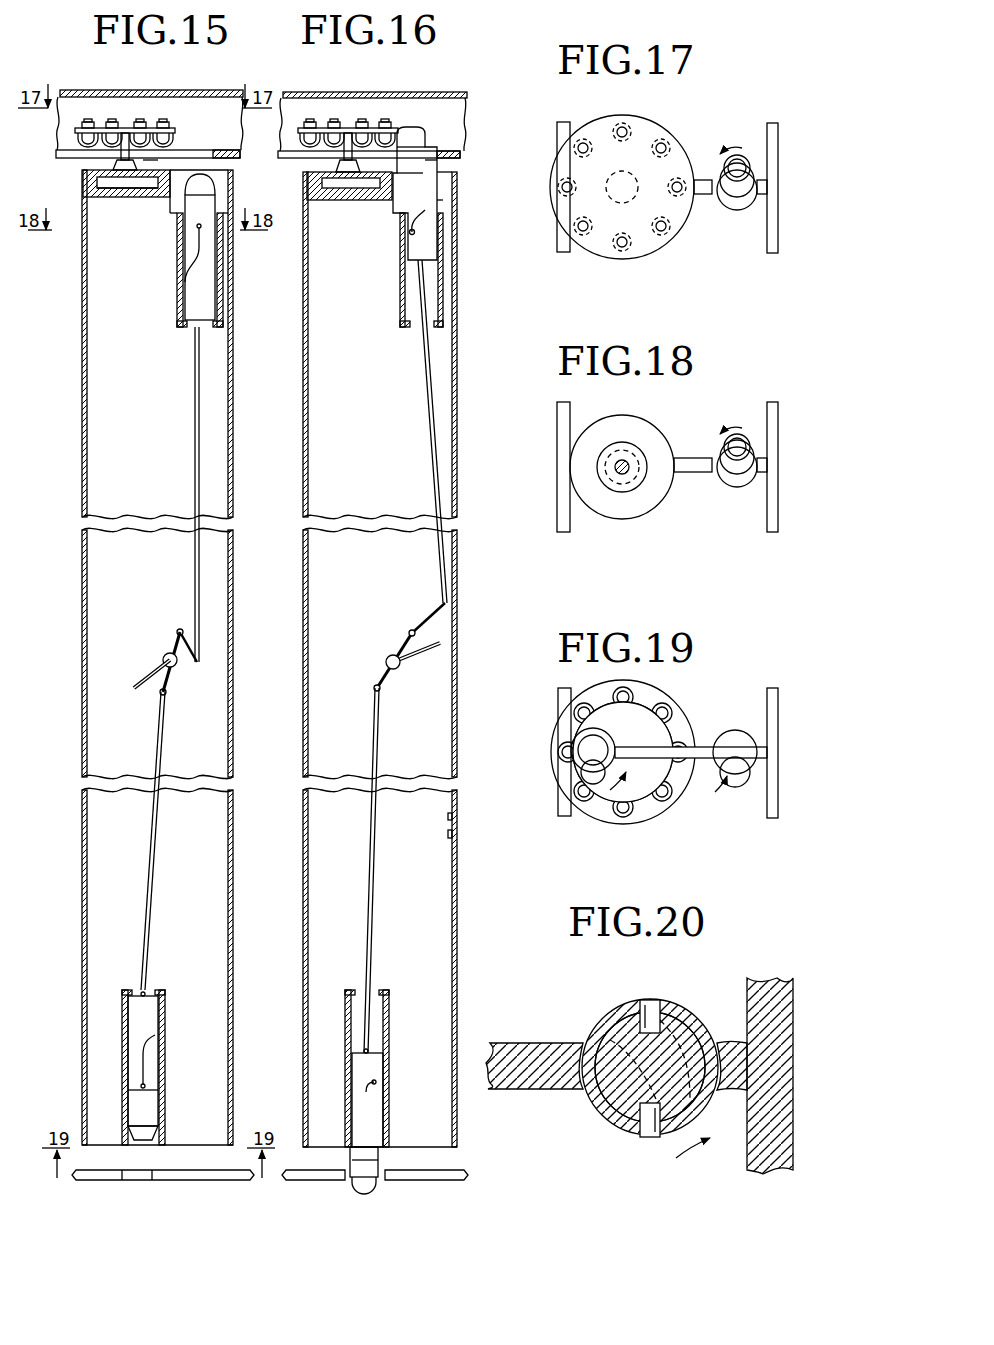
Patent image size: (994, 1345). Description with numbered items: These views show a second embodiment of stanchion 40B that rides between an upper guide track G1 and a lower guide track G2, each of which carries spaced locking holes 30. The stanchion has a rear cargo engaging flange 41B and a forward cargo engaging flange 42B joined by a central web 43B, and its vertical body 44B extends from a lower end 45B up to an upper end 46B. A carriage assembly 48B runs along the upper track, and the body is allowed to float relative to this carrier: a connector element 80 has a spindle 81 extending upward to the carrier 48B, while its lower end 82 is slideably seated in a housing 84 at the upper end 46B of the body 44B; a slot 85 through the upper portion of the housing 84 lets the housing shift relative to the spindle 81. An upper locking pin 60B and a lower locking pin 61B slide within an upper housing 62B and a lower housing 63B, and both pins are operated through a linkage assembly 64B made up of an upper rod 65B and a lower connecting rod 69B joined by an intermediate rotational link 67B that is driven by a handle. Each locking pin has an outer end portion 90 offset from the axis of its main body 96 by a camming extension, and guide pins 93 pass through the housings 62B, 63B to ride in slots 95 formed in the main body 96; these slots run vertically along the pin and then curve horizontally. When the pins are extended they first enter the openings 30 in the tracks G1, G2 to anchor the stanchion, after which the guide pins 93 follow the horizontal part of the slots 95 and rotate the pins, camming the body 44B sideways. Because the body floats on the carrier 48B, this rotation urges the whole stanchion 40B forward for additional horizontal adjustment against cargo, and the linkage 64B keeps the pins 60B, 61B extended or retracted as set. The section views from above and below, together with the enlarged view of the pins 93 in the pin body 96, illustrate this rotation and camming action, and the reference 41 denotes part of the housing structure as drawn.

In FIG. 15, the locking holes 30 is at (140, 1180).
In FIG. 15, the stanchion 40B is at (56, 740).
In FIG. 16, the stanchion 40B is at (471, 920).
In FIG. 16, the housing 41 is at (304, 905).
In FIG. 15, the rear cargo engaging flange 41B is at (86, 616).
In FIG. 16, the rear cargo engaging flange 41B is at (458, 807).
In FIG. 17, the rear cargo engaging flange 41B is at (566, 126).
In FIG. 18, the rear cargo engaging flange 41B is at (558, 512).
In FIG. 19, the rear cargo engaging flange 41B is at (558, 798).
In FIG. 15, the forward cargo engaging flange 42B is at (234, 402).
In FIG. 17, the forward cargo engaging flange 42B is at (770, 136).
In FIG. 18, the forward cargo engaging flange 42B is at (772, 528).
In FIG. 20, the forward cargo engaging flange 42B is at (794, 1008).
In FIG. 15, the central web 43B is at (114, 365).
In FIG. 15, the vertical body 44B is at (106, 858).
In FIG. 15, the lower end 45B is at (82, 1138).
In FIG. 15, the upper end 46B is at (100, 180).
In FIG. 15, the carriage assembly 48B is at (118, 128).
In FIG. 17, the carriage assembly 48B is at (626, 258).
In FIG. 18, the carriage assembly 48B is at (638, 520).
In FIG. 19, the carriage assembly 48B is at (678, 702).
In FIG. 15, the upper locking pin 60B is at (200, 312).
In FIG. 17, the upper locking pin 60B is at (738, 202).
In FIG. 18, the upper locking pin 60B is at (737, 478).
In FIG. 15, the lower locking pin 61B is at (150, 1105).
In FIG. 15, the upper housing 62B is at (222, 316).
In FIG. 16, the upper housing 62B is at (421, 270).
In FIG. 18, the upper housing 62B is at (750, 480).
In FIG. 19, the upper housing 62B is at (773, 802).
In FIG. 20, the upper housing 62B is at (588, 1030).
In FIG. 15, the lower housing 63B is at (122, 1012).
In FIG. 15, the linkage assembly 64B is at (150, 716).
In FIG. 15, the upper rod 65B is at (194, 492).
In FIG. 15, the intermediate rotational link 67B is at (176, 640).
In FIG. 15, the lower connecting rod 69B is at (152, 867).
In FIG. 15, the connector element 80 is at (156, 158).
In FIG. 15, the spindle 81 is at (120, 156).
In FIG. 15, the lower end of connector element 82 is at (124, 188).
In FIG. 15, the housing 84 is at (112, 198).
In FIG. 15, the slot 85 is at (165, 166).
In FIG. 17, the outer end portion 90 is at (736, 164).
In FIG. 18, the outer end portion 90 is at (740, 444).
In FIG. 19, the outer end portion 90 is at (724, 790).
In FIG. 20, the guide pins 93 is at (654, 998).
In FIG. 16, the slots 95 is at (442, 229).
In FIG. 16, the main body 96 is at (420, 204).
In FIG. 20, the main body 96 is at (610, 1122).
In FIG. 16, the upper guide track G1 is at (306, 92).
In FIG. 16, the lower guide track G2 is at (444, 1180).